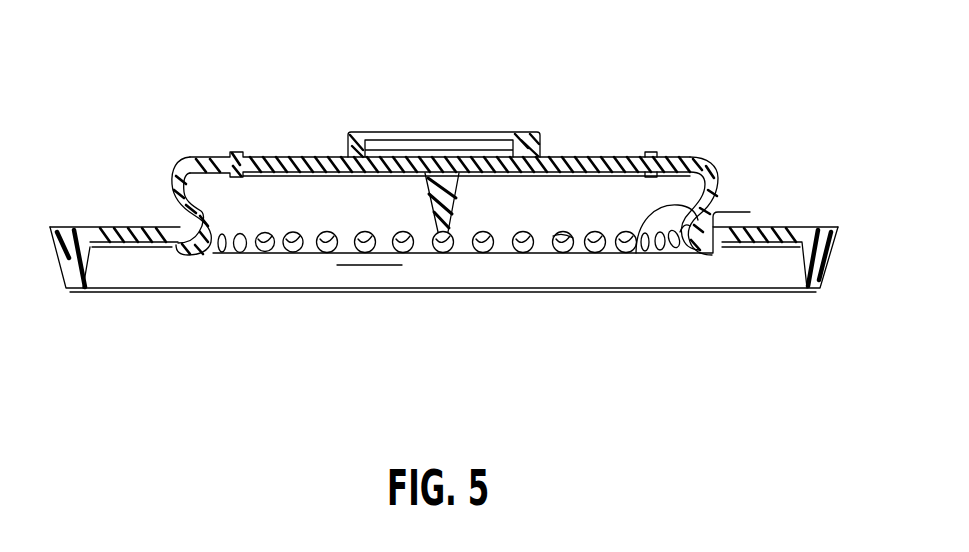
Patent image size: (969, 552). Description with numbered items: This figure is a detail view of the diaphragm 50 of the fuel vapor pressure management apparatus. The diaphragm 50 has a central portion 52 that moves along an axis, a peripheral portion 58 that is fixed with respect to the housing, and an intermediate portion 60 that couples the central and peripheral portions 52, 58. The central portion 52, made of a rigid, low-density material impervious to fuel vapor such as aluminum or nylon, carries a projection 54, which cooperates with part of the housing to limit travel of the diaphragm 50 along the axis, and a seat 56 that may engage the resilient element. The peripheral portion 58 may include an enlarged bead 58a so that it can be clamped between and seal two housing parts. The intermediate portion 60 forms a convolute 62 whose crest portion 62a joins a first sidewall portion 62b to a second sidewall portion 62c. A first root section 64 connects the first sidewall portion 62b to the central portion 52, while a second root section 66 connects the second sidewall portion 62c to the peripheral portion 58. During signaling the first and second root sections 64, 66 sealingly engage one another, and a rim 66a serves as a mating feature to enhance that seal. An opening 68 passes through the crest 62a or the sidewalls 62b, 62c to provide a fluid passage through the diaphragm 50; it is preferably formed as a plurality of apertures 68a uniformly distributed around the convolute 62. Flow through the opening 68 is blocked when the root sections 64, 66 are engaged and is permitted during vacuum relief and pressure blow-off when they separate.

The diaphragm 50 is at (178, 108).
The central portion 52 is at (310, 156).
The projection 54 is at (451, 221).
The seat 56 is at (538, 135).
The peripheral portion 58 is at (112, 227).
The enlarged bead 58a is at (52, 258).
The intermediate portion 60 is at (165, 191).
The convolute 62 is at (700, 387).
The crest portion 62a is at (543, 250).
The first sidewall portion 62b is at (641, 245).
The second sidewall portion 62c is at (716, 252).
The first root section 64 is at (714, 172).
The second root section 66 is at (722, 252).
The rim 66a is at (745, 212).
The opening 68 is at (342, 368).
The apertures 68a is at (258, 252).